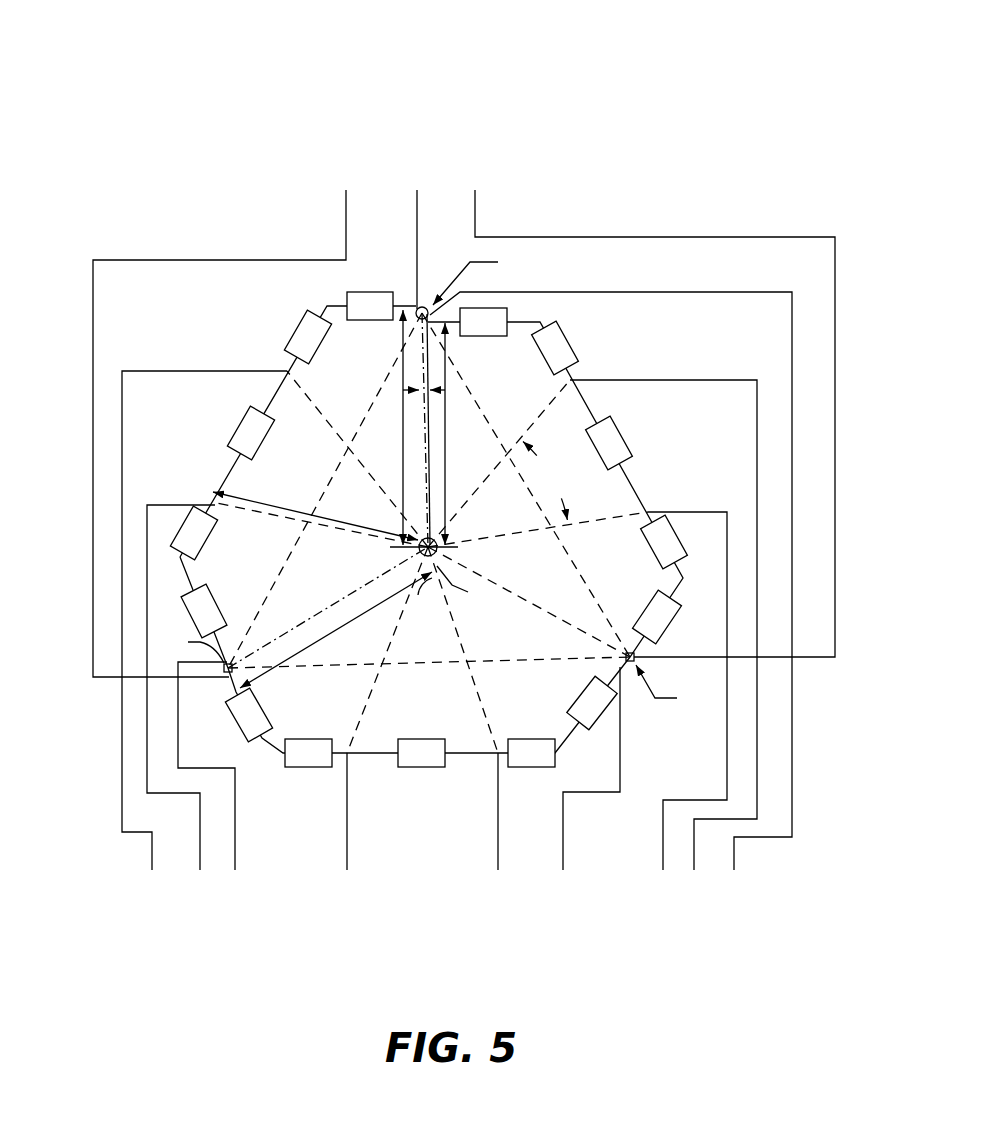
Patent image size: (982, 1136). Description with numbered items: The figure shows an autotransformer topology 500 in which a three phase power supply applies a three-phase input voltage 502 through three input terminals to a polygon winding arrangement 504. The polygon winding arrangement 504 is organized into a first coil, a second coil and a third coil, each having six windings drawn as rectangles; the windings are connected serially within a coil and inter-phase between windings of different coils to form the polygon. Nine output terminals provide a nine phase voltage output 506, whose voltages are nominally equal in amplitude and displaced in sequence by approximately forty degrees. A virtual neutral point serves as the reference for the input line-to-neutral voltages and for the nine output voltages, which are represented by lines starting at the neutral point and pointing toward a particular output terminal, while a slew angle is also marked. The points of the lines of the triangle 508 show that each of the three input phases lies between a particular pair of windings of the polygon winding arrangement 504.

The autotransformer topology 500 is at (78, 25).
The three-phase input voltage 502 is at (464, 366).
The polygon winding arrangement 504 is at (298, 318).
The nine phase voltage output 506 is at (457, 634).
The triangle 508 is at (577, 558).